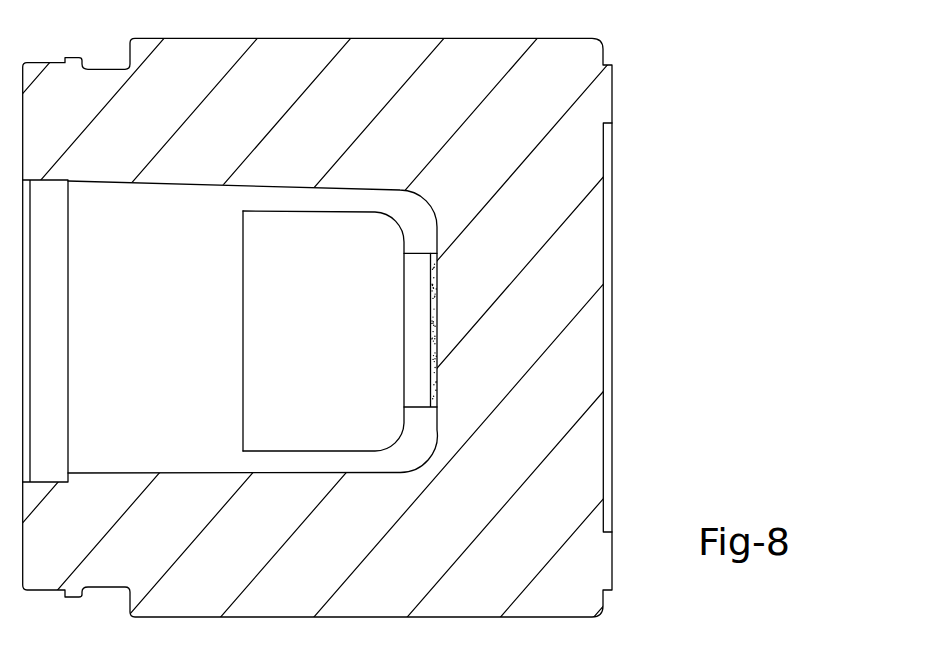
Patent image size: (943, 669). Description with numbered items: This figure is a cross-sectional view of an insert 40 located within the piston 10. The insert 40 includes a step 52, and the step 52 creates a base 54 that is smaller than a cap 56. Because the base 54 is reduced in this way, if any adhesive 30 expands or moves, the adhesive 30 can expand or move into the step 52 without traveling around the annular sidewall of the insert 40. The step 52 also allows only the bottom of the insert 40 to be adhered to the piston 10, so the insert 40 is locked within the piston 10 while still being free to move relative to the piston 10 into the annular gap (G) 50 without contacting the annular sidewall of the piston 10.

The piston 10 is at (640, 59).
The adhesive 30 is at (432, 292).
The insert 40 is at (228, 280).
The annular gap 50 is at (350, 200).
The step 52 is at (431, 418).
The base 54 is at (412, 252).
The cap 56 is at (255, 357).
The annular gap G is at (222, 160).